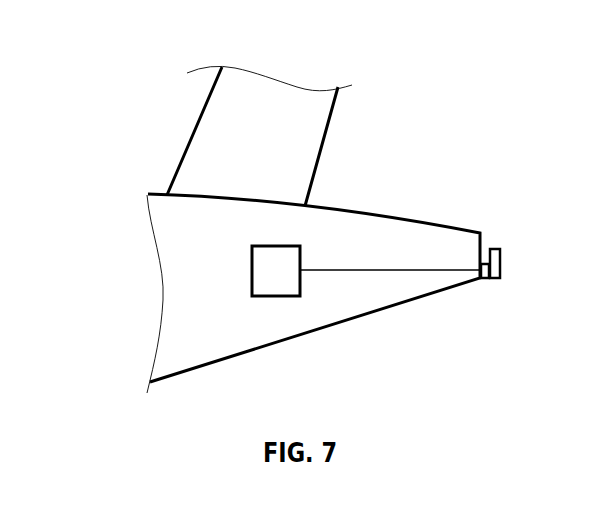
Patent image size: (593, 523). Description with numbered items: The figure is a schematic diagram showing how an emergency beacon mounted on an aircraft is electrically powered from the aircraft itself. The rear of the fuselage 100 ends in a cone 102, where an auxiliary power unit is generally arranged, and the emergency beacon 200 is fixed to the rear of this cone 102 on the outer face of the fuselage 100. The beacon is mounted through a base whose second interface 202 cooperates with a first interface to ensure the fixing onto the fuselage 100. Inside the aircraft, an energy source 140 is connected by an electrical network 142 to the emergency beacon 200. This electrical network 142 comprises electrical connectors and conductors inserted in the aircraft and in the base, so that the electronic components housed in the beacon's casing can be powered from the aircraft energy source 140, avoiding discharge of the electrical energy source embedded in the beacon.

The fuselage 100 is at (206, 267).
The cone 102 is at (470, 142).
The energy source 140 is at (282, 263).
The electrical network 142 is at (420, 254).
The emergency beacon 200 is at (498, 279).
The second interface 202 is at (483, 280).